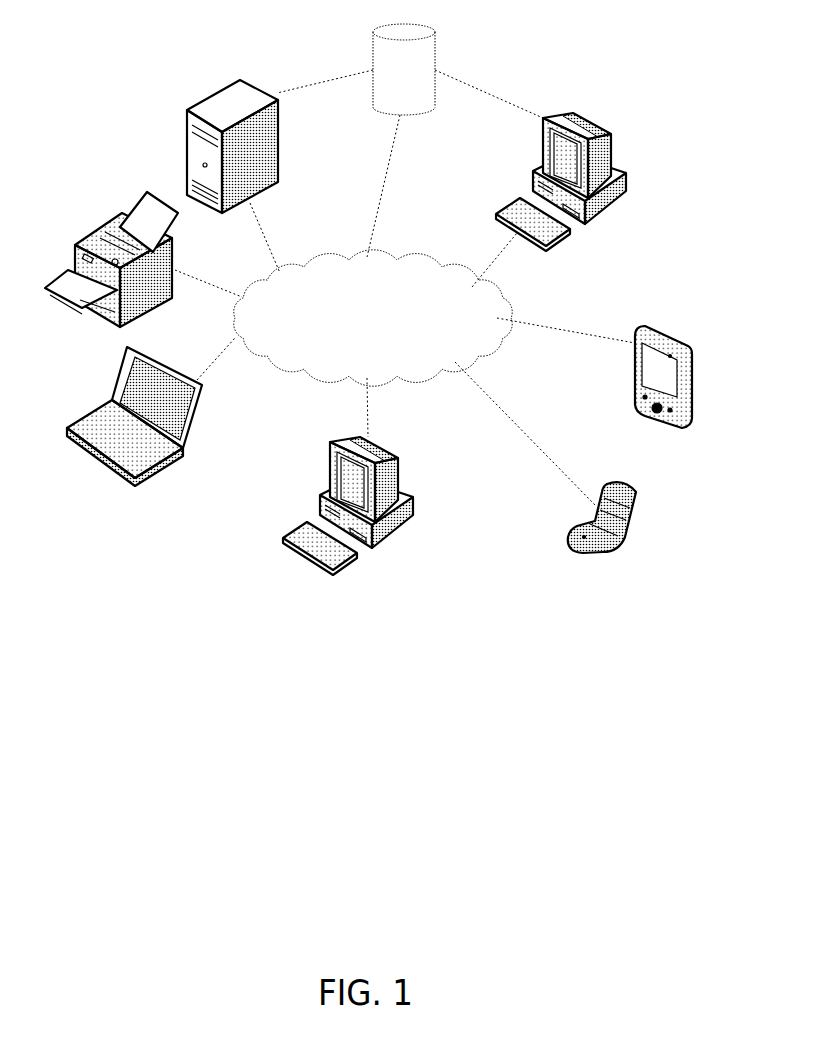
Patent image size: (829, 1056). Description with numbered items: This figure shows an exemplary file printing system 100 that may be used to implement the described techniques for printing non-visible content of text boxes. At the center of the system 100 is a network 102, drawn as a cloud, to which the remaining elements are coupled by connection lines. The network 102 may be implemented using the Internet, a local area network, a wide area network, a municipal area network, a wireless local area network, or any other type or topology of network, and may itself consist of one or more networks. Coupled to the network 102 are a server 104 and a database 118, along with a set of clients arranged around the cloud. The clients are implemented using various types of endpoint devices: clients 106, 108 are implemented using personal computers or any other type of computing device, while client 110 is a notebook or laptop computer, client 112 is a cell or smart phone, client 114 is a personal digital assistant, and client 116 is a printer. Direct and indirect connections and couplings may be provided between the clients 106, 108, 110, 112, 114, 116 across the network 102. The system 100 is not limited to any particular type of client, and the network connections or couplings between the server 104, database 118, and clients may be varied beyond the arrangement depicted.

The file printing system 100 is at (112, 762).
The network 102 is at (349, 355).
The server 104 is at (213, 144).
The client 106 is at (571, 179).
The client 108 is at (378, 506).
The client 110 is at (157, 416).
The client 112 is at (634, 517).
The client 114 is at (693, 377).
The client 116 is at (105, 259).
The database 118 is at (389, 80).